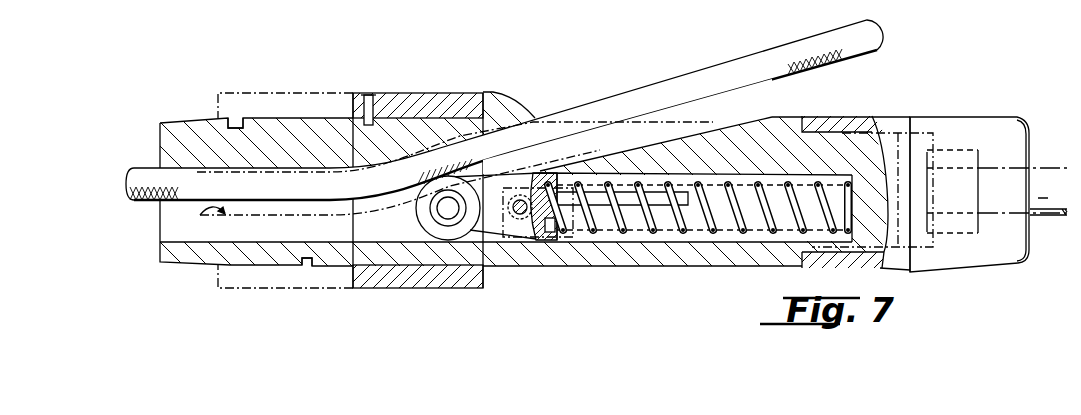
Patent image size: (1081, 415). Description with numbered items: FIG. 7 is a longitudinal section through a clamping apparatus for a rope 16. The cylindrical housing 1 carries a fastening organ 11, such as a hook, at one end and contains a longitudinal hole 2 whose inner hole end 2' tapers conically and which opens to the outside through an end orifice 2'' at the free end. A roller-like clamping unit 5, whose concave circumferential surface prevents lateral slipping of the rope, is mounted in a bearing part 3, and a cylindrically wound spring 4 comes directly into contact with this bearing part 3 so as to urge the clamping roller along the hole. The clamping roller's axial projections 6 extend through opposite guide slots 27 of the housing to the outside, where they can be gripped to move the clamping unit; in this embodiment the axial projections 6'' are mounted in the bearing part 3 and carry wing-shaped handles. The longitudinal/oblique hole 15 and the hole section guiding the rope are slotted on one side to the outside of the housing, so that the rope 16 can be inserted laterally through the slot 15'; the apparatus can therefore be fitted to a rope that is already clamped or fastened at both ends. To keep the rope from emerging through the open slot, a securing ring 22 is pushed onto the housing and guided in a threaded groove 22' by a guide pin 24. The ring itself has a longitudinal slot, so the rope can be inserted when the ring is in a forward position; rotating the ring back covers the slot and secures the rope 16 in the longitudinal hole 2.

The housing 1 is at (176, 128).
The longitudinal hole 2 is at (698, 249).
The inner hole end 2' is at (845, 175).
The end orifice 2'' is at (171, 237).
The bearing part 3 is at (493, 226).
The spring 4 is at (704, 233).
The clamping unit 5 is at (425, 228).
The axial projections 6 is at (448, 264).
The axial projections 6'' is at (522, 255).
The fastening organ 11 is at (1048, 178).
The oblique hole 15 is at (639, 122).
The slot 15' is at (438, 182).
The rope 16 is at (146, 180).
The securing ring 22 is at (350, 170).
The threaded groove 22' is at (274, 191).
The guide pin 24 is at (369, 94).
The guide slots 27 is at (584, 245).